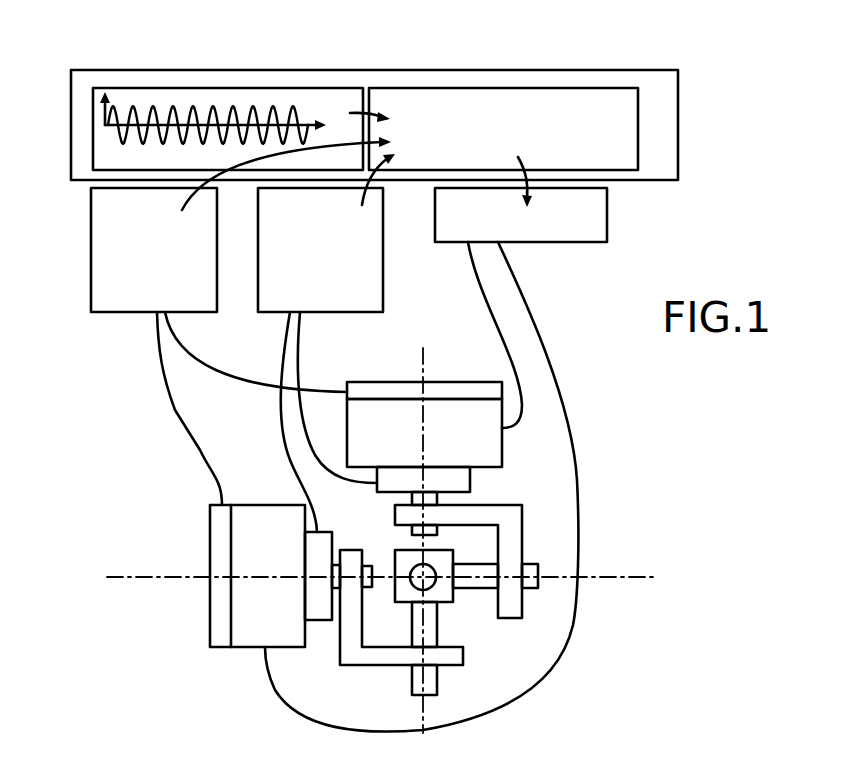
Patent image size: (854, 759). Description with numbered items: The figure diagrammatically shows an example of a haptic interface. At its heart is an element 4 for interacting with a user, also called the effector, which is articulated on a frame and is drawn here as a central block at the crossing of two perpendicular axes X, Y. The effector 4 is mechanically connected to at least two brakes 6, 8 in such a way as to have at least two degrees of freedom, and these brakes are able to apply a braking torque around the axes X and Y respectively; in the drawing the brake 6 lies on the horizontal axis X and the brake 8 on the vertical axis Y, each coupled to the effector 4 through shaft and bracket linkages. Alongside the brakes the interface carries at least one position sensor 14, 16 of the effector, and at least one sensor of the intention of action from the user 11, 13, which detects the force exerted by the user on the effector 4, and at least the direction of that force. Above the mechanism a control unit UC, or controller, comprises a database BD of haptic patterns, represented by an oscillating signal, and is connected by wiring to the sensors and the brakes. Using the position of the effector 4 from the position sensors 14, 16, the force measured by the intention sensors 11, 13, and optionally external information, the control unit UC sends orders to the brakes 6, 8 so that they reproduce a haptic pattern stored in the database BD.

The element for interacting with a user 4 is at (437, 582).
The brake 6 is at (243, 636).
The brake 8 is at (488, 442).
The sensor of the intention of action from the user 11 is at (215, 523).
The sensor of the intention of action from the user 13 is at (455, 390).
The position sensor 14 is at (317, 552).
The position sensor 16 is at (457, 480).
The database of haptic patterns BD is at (237, 100).
The control unit UC is at (440, 68).
The axis X is at (627, 577).
The axis Y is at (421, 716).